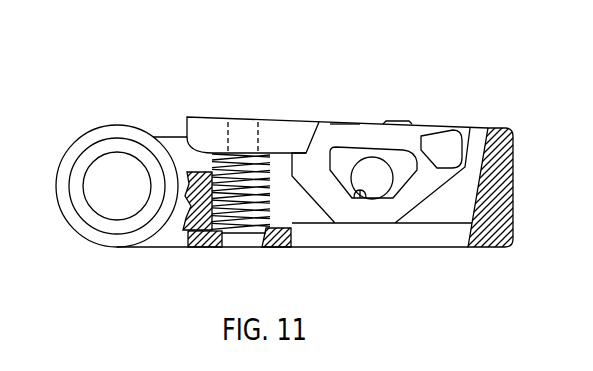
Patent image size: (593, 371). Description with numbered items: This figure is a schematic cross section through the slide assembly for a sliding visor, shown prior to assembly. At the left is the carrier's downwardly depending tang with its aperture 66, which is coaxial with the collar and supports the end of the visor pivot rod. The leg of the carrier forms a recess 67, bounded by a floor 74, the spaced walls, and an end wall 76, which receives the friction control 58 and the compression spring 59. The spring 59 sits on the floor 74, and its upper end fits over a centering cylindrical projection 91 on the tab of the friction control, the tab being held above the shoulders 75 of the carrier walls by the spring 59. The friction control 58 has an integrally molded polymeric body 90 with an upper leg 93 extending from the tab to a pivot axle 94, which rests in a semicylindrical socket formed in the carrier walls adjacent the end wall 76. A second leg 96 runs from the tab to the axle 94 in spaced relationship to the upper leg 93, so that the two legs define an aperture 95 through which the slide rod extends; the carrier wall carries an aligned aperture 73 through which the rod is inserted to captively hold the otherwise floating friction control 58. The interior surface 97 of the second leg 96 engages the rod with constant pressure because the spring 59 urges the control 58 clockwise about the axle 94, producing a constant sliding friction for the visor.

The friction control 58 is at (302, 97).
The aperture 66 is at (82, 155).
The shoulders 75 is at (95, 222).
The centering cylindrical projection 91 is at (230, 122).
The compression spring 59 is at (198, 158).
The floor 74 is at (183, 238).
The recess 67 is at (297, 203).
The upper leg 93 is at (348, 127).
The body 90 is at (388, 113).
The pivot axle 94 is at (438, 130).
The end wall 76 is at (513, 168).
The aperture 95 is at (403, 172).
The aperture 73 is at (378, 192).
The interior surface 97 is at (352, 198).
The second leg 96 is at (362, 192).